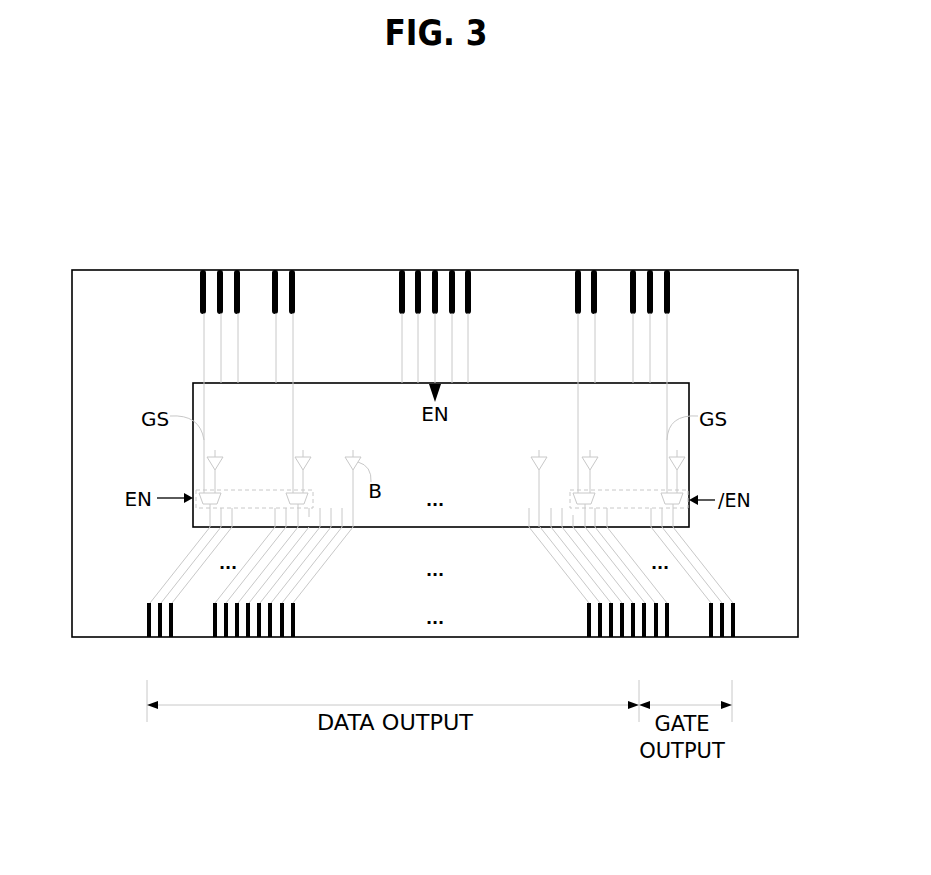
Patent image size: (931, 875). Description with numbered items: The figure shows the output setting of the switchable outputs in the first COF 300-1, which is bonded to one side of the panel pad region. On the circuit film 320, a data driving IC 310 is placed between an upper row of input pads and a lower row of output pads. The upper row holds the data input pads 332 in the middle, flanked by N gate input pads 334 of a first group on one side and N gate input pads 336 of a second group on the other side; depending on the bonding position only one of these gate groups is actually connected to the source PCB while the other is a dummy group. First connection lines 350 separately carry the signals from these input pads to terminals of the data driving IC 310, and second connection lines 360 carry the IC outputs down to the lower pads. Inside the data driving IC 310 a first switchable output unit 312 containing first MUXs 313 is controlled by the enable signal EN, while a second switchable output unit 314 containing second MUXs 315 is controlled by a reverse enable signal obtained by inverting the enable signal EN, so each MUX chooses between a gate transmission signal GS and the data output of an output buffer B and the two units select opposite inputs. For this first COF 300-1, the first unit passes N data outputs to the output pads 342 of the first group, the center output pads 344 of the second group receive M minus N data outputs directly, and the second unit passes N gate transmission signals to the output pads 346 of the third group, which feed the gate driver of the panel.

The first COF 300-1 is at (403, 194).
The circuit film 320 is at (724, 305).
The data driving IC 310 is at (504, 413).
The data input pads 332 is at (392, 267).
The gate input pads of the first group 334 is at (198, 267).
The gate input pads of the second group 336 is at (672, 267).
The first connection lines 350 is at (204, 360).
The first switchable output unit 312 is at (245, 492).
The first MUX 313 is at (307, 500).
The second switchable output unit 314 is at (625, 490).
The second MUX 315 is at (572, 497).
The output pads of the first group 342 is at (238, 640).
The output pads of the second group 344 is at (637, 640).
The output pads of the third group 346 is at (733, 640).
The second connection lines 360 is at (167, 580).